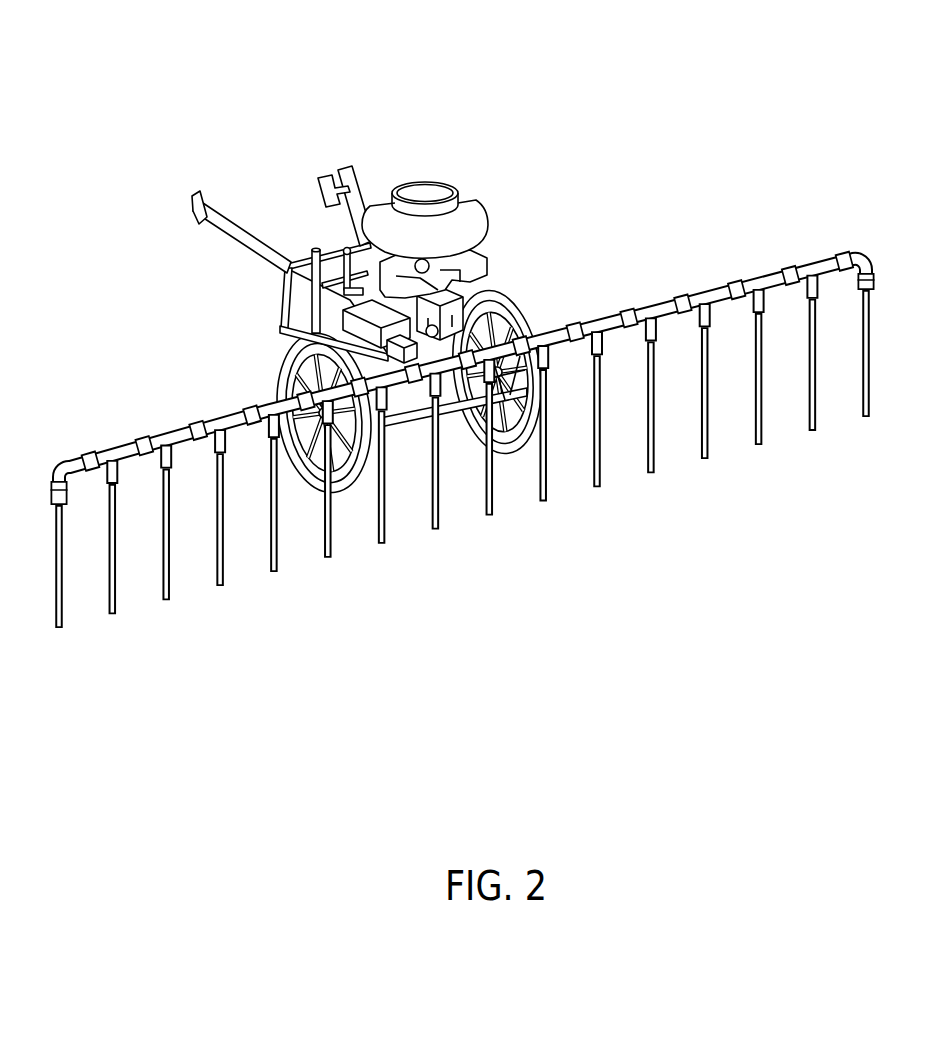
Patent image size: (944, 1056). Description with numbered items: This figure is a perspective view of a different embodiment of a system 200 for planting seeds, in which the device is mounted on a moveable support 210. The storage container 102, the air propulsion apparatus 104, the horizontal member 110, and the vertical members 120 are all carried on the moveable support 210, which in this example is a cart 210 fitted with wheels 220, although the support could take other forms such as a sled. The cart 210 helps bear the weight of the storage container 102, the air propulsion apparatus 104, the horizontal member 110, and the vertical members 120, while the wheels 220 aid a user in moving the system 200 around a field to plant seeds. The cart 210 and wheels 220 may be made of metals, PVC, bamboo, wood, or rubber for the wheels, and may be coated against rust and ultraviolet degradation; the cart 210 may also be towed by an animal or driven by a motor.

The system for planting seeds 200 is at (414, 82).
The moveable support 210 is at (222, 214).
The storage container 102 is at (478, 207).
The air propulsion apparatus 104 is at (476, 262).
The horizontal member 110 is at (107, 443).
The vertical members 120 is at (63, 602).
The wheels 220 is at (281, 378).